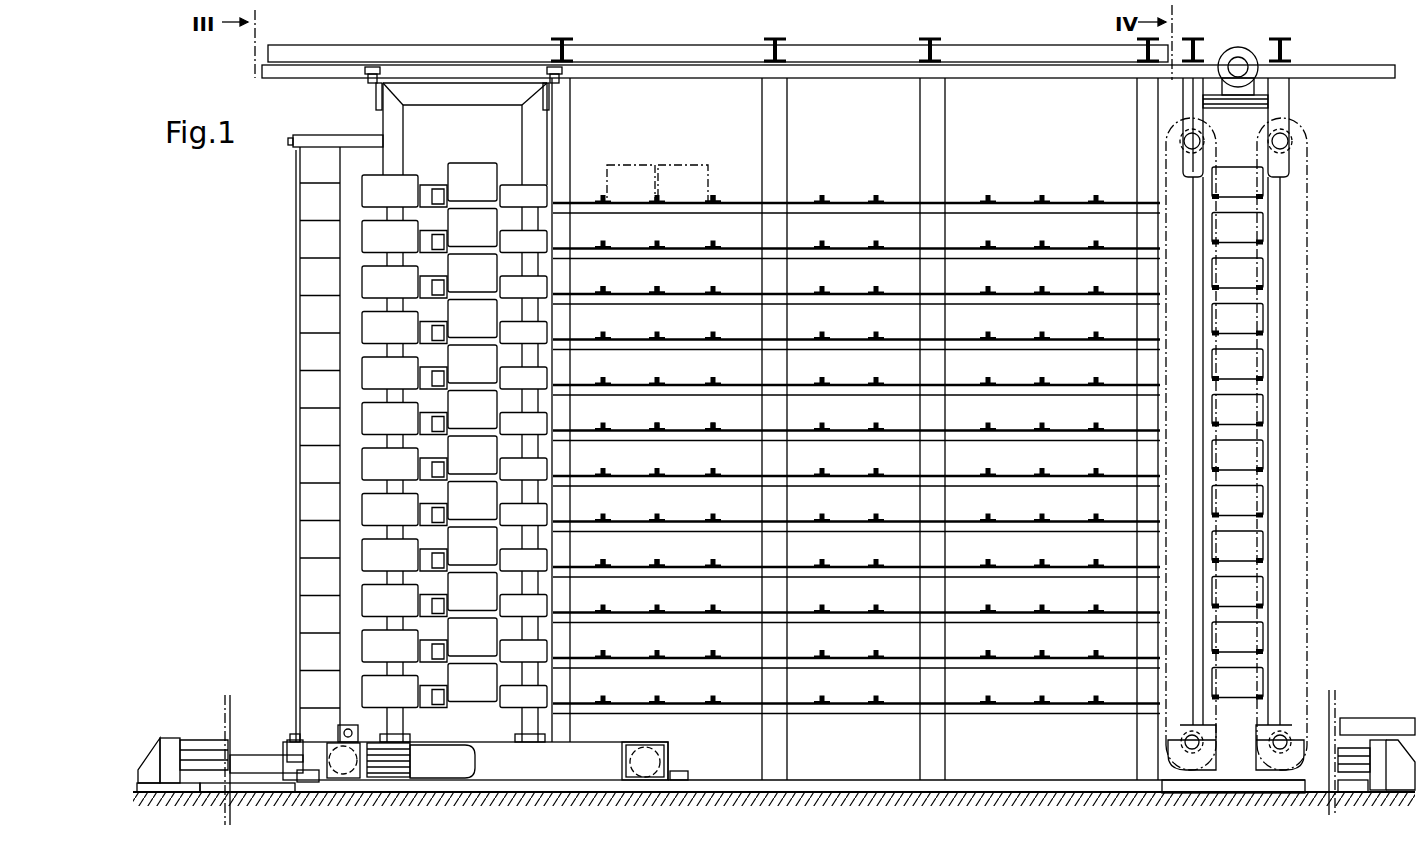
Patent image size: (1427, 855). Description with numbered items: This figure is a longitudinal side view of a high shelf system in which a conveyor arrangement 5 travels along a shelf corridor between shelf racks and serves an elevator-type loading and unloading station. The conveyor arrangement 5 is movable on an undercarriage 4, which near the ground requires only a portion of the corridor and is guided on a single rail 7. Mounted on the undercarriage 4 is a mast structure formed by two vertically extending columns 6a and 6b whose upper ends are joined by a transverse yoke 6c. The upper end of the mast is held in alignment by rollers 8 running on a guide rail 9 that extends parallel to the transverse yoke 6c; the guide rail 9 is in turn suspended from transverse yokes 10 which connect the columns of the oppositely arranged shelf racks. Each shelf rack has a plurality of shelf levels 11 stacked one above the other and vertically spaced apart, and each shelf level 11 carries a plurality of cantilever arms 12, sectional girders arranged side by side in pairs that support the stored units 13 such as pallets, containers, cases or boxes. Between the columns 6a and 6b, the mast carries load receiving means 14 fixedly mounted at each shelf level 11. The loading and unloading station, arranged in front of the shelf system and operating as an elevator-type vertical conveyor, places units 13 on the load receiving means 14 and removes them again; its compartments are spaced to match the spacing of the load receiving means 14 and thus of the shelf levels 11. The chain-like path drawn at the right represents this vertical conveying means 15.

The undercarriage 4 is at (590, 765).
The conveyor arrangement 5 is at (378, 740).
The column 6a is at (394, 128).
The column 6b is at (522, 130).
The transverse yoke 6c is at (430, 95).
The rail 7 is at (832, 782).
The rollers 8 is at (374, 66).
The guide rail 9 is at (462, 64).
The transverse yokes 10 is at (780, 38).
The shelf levels 11 is at (673, 254).
The cantilever arms 12 is at (713, 198).
The units 13 is at (478, 175).
The load receiving means 14 is at (365, 285).
The conveyor chain 15 is at (1310, 183).